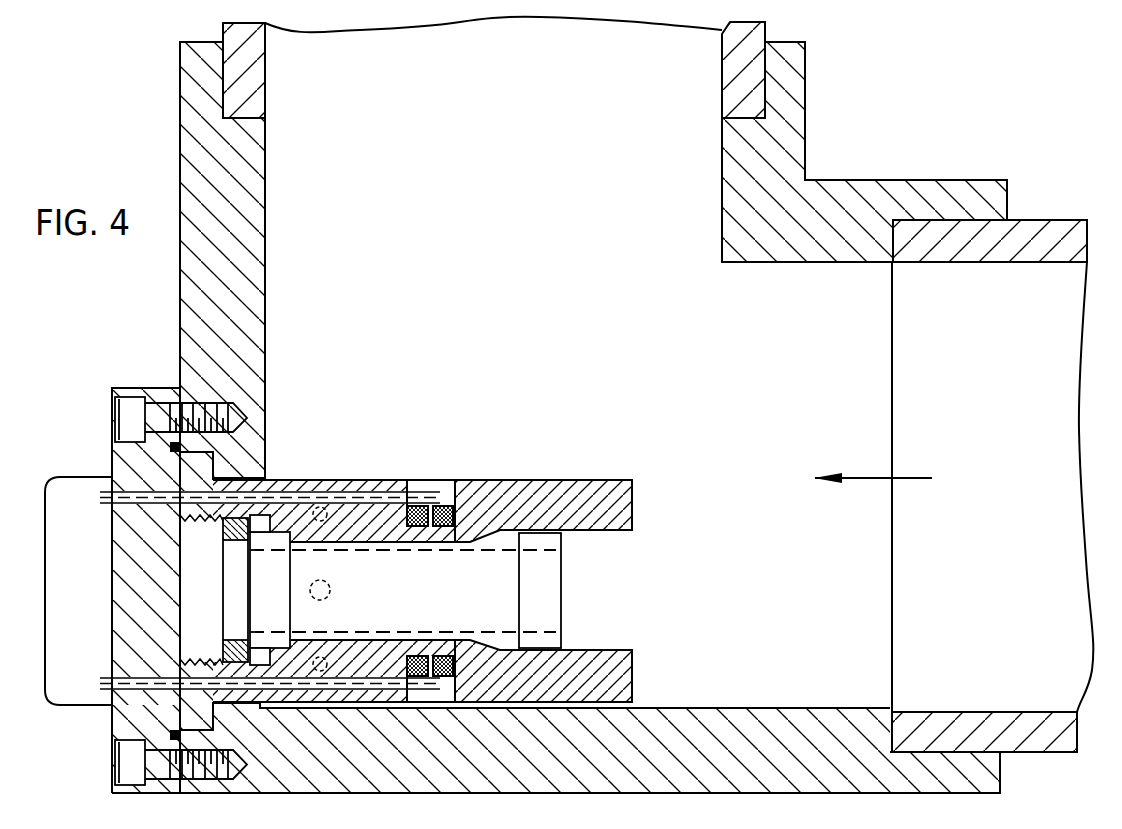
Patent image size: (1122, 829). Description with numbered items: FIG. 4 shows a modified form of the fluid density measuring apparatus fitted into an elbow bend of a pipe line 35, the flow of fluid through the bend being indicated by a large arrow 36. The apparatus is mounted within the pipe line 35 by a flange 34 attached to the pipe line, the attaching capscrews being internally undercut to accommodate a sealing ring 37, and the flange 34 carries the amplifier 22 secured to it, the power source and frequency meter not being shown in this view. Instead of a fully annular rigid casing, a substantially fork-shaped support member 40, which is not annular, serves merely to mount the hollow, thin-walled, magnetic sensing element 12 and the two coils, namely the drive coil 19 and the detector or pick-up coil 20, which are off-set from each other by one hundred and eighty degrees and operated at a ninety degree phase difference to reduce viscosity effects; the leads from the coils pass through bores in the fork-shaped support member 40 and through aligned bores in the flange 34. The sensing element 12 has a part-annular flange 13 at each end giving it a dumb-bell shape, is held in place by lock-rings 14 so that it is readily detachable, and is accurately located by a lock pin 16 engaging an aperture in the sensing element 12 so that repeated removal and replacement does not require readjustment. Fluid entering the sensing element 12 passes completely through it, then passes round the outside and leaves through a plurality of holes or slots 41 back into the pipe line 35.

The sensing element 12 is at (444, 582).
The flange 13 is at (558, 580).
The lock-rings 14 is at (234, 640).
The lock pin 16 is at (345, 600).
The drive coil 19 is at (448, 506).
The detector coil 20 is at (447, 703).
The amplifier 22 is at (78, 476).
The flange 34 is at (112, 718).
The pipe line 35 is at (500, 640).
The large arrow 36 is at (912, 478).
The sealing ring 37 is at (168, 447).
The fork-shaped support member 40 is at (632, 674).
The holes or slots 41 is at (322, 513).